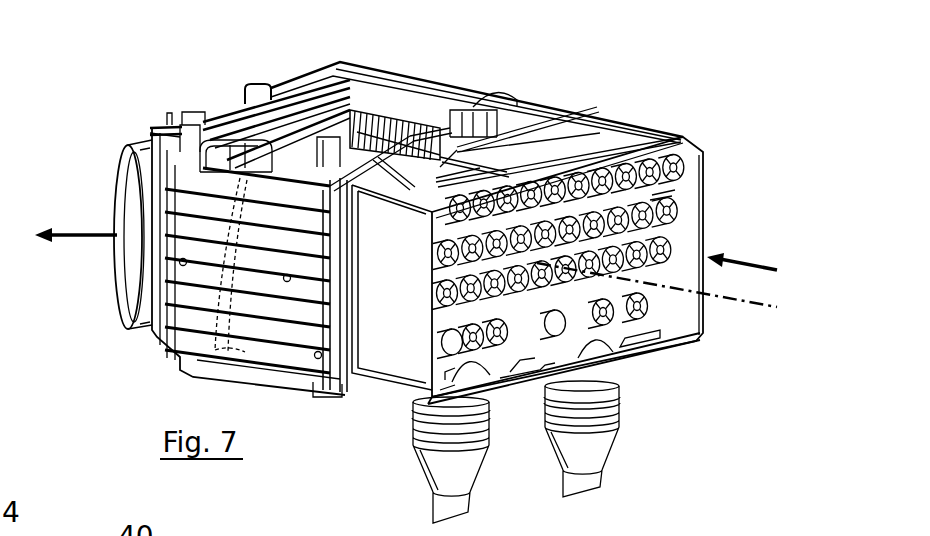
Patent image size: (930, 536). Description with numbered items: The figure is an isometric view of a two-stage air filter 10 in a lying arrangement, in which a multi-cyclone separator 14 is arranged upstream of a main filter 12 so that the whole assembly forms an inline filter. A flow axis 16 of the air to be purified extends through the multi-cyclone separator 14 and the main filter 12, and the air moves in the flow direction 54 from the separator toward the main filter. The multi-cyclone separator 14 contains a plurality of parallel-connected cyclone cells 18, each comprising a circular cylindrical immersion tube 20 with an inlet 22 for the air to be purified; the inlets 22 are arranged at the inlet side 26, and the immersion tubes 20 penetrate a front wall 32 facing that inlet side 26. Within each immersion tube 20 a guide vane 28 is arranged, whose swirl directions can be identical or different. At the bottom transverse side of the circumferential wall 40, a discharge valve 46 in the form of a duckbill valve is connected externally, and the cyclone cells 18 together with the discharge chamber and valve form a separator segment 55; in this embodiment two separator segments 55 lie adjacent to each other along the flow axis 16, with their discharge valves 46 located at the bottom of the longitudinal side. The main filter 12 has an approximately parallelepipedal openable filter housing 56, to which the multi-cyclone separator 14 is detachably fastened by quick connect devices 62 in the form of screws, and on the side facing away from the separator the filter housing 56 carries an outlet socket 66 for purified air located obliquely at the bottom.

The air filter 10 is at (86, 70).
The main filter 12 is at (372, 70).
The multi-cyclone separator 14 is at (628, 116).
The flow axis 16 is at (777, 307).
The cyclone cell 18 is at (690, 164).
The immersion tube 20 is at (665, 193).
The inlet 22 is at (653, 202).
The inlet side 26 is at (720, 336).
The guide vane 28 is at (663, 213).
The front wall 32 is at (547, 343).
The circumferential wall 40 is at (656, 140).
The discharge valve 46 is at (583, 468).
The flow direction 54 is at (777, 270).
The separator segment 55 is at (652, 333).
The filter housing 56 is at (300, 108).
The quick connect devices 62 is at (452, 148).
The outlet socket 66 is at (113, 200).